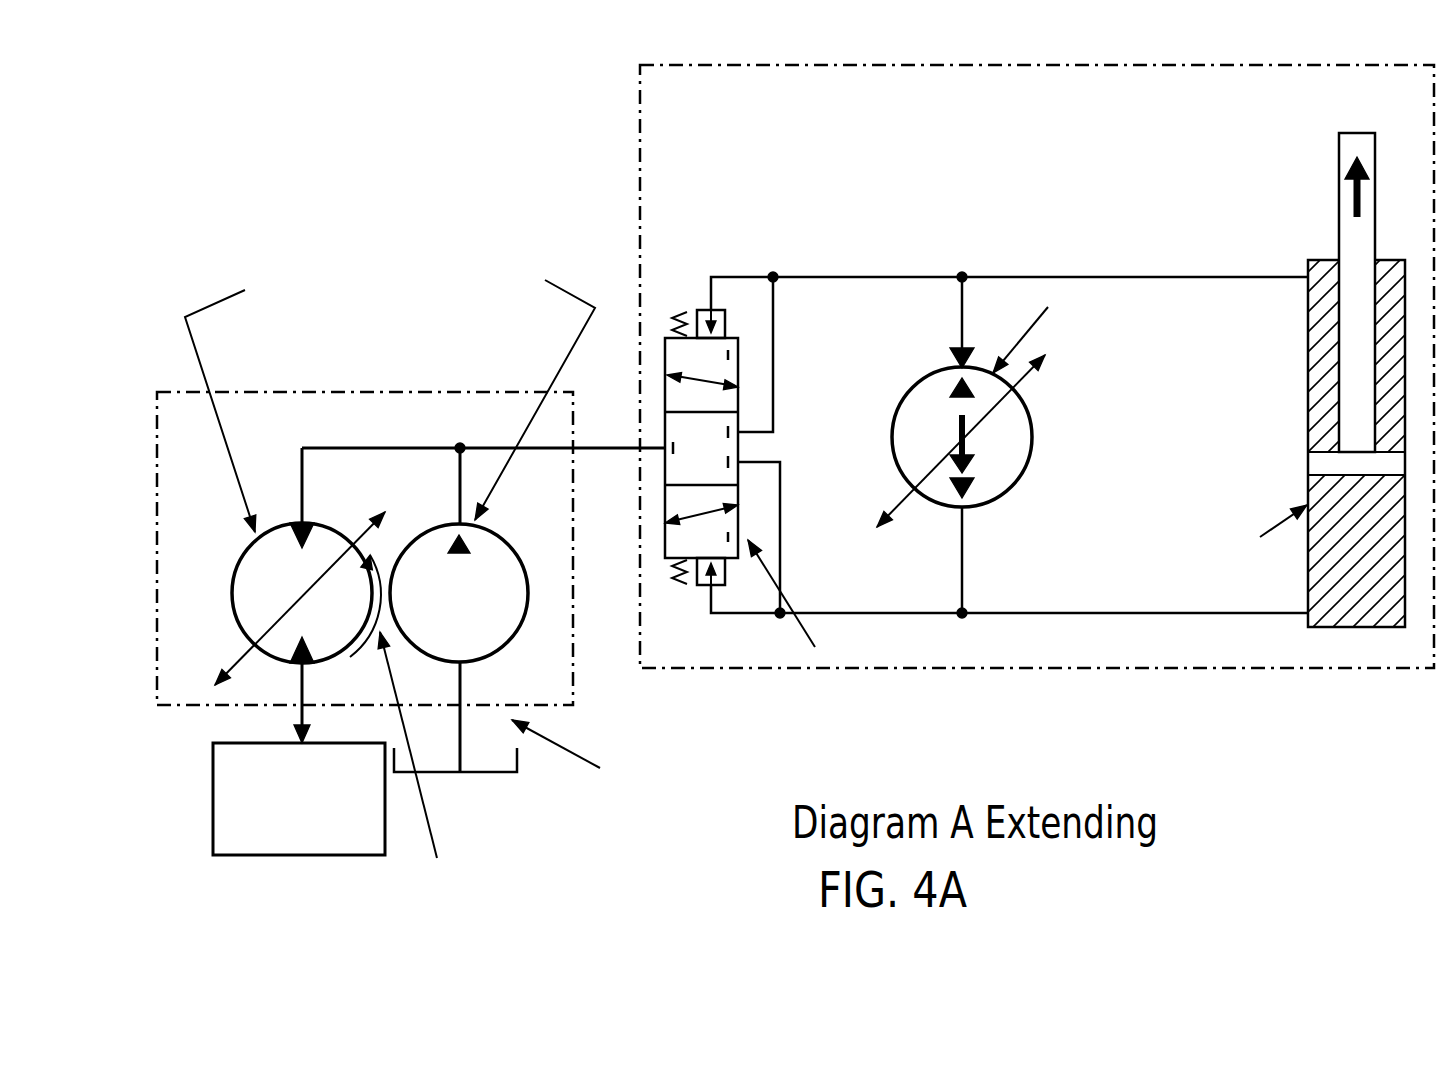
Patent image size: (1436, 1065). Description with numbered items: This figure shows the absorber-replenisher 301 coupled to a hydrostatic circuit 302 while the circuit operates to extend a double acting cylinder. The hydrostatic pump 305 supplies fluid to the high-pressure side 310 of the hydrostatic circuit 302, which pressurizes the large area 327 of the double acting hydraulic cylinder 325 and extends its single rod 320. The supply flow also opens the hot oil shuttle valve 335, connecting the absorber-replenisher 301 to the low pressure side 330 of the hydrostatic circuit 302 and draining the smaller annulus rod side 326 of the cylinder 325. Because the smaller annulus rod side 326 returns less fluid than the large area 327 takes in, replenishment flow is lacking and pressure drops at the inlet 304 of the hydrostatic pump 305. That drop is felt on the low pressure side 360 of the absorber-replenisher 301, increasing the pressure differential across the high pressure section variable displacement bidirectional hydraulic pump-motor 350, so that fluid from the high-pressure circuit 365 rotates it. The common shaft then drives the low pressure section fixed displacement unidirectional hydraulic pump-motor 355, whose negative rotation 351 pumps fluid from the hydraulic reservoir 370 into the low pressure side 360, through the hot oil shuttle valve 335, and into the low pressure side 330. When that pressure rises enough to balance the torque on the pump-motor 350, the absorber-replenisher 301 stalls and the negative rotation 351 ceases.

The absorber-replenisher 301 is at (157, 448).
The hydrostatic circuit 302 is at (1102, 682).
The inlet of the hydrostatic pump 304 is at (958, 364).
The hydrostatic pump 305 is at (1031, 421).
The high-pressure side of the hydrostatic circuit 310 is at (1113, 613).
The single rod 320 is at (1375, 228).
The double acting hydraulic cylinder 325 is at (1320, 248).
The smaller annulus rod side 326 is at (1308, 317).
The large area 327 is at (1308, 488).
The low pressure side of the hydrostatic circuit 330 is at (1025, 277).
The hot oil shuttle valve 335 is at (668, 338).
The high pressure section variable displacement bidirectional hydraulic pump-motor 350 is at (235, 570).
The negative rotation 351 is at (350, 657).
The low pressure section fixed displacement unidirectional hydraulic pump-motor 355 is at (490, 527).
The low pressure side of the absorber-replenisher 360 is at (593, 448).
The high-pressure circuit 365 is at (278, 855).
The hydraulic reservoir 370 is at (483, 772).